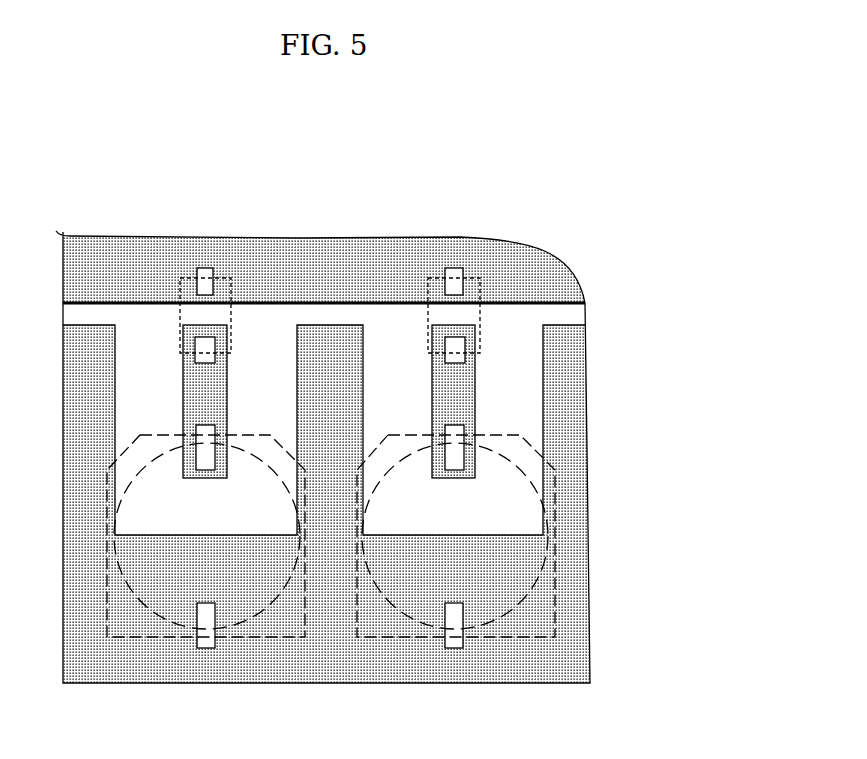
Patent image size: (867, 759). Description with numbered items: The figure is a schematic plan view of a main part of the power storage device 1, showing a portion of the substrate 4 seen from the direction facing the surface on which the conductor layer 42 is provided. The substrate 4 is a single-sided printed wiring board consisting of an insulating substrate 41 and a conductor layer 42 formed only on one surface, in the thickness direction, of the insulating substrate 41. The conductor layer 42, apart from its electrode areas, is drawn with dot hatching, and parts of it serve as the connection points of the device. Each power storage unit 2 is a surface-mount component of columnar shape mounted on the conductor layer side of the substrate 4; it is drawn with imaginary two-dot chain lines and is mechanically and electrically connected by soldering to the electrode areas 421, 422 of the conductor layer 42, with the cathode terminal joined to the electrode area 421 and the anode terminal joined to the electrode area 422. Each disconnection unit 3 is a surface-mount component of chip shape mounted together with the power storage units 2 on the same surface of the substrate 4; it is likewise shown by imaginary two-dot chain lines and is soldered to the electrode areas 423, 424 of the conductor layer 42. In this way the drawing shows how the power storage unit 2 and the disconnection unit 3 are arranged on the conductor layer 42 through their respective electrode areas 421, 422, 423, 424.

The power storage device 1 is at (349, 439).
The power storage unit 2 is at (260, 640).
The disconnection unit 3 is at (189, 276).
The substrate 4 is at (348, 439).
The insulating substrate 41 is at (565, 318).
The conductor layer 42 is at (324, 464).
The electrode area 421 is at (207, 645).
The electrode area 422 is at (197, 442).
The electrode area 423 is at (208, 358).
The electrode area 424 is at (209, 268).